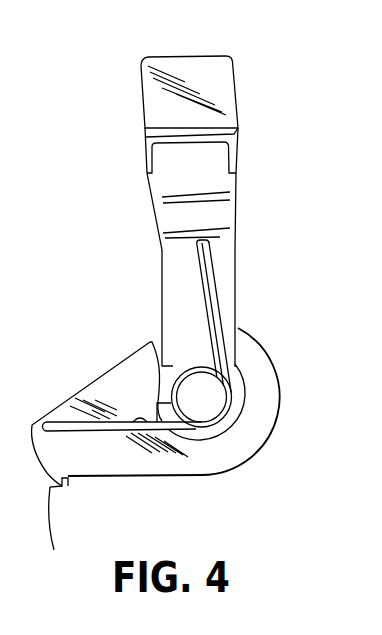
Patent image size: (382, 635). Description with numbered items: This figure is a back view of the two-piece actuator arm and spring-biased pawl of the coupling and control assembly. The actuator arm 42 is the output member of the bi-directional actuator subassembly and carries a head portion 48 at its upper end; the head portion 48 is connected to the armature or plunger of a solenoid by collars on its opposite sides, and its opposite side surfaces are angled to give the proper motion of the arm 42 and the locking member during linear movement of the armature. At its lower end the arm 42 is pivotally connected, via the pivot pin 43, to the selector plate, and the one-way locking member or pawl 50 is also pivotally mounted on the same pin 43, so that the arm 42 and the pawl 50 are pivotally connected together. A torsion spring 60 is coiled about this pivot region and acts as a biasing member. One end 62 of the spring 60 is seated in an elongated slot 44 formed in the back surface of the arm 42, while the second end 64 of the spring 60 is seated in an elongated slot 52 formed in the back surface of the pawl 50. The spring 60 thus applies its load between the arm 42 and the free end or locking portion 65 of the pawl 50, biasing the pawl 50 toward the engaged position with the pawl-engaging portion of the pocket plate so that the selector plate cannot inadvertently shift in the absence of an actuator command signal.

The actuator arm 42 is at (216, 220).
The pivot pin 43 is at (203, 396).
The elongated slot 44 is at (205, 325).
The head portion 48 is at (235, 78).
The pawl 50 is at (143, 494).
The elongated slot 52 is at (133, 420).
The torsion spring 60 is at (174, 378).
The one end of the spring 62 is at (210, 267).
The second end of the spring 64 is at (83, 431).
The locking portion 65 is at (55, 550).